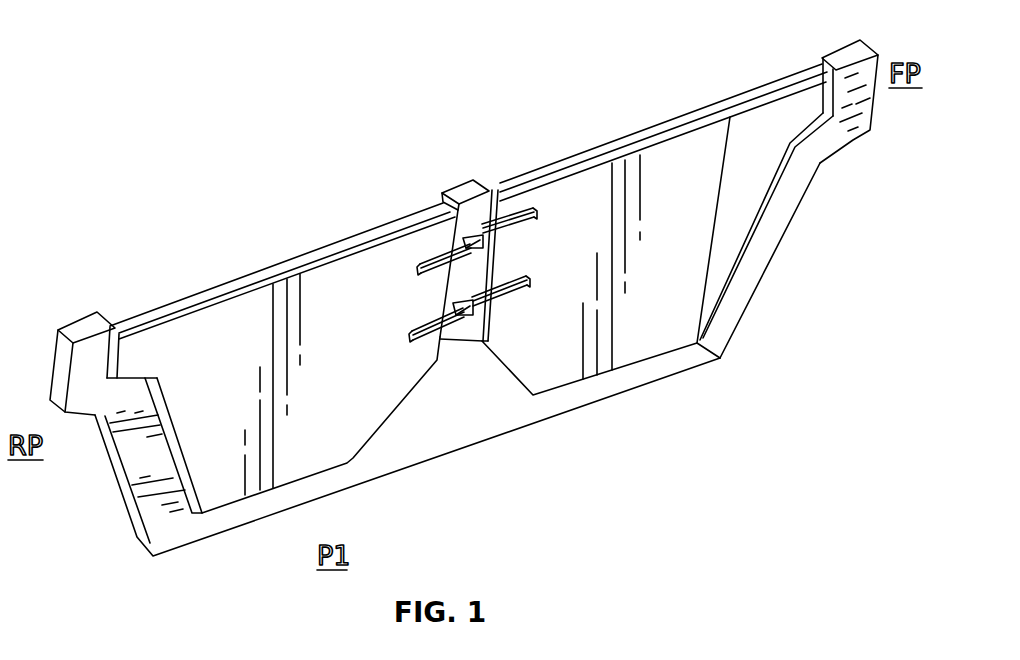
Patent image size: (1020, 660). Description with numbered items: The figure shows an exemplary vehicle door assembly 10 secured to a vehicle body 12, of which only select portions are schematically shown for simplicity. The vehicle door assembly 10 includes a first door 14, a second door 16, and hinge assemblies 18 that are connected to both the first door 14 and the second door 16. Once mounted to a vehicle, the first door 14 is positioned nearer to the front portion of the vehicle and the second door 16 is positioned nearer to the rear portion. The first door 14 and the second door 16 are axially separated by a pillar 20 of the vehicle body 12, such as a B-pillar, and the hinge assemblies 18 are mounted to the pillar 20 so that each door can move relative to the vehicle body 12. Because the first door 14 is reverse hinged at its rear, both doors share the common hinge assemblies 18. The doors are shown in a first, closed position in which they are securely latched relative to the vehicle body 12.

The vehicle door assembly 10 is at (601, 124).
The vehicle body 12 is at (235, 546).
The first door 14 is at (695, 148).
The second door 16 is at (243, 315).
The hinge assemblies 18 is at (485, 216).
The pillar 20 is at (460, 193).